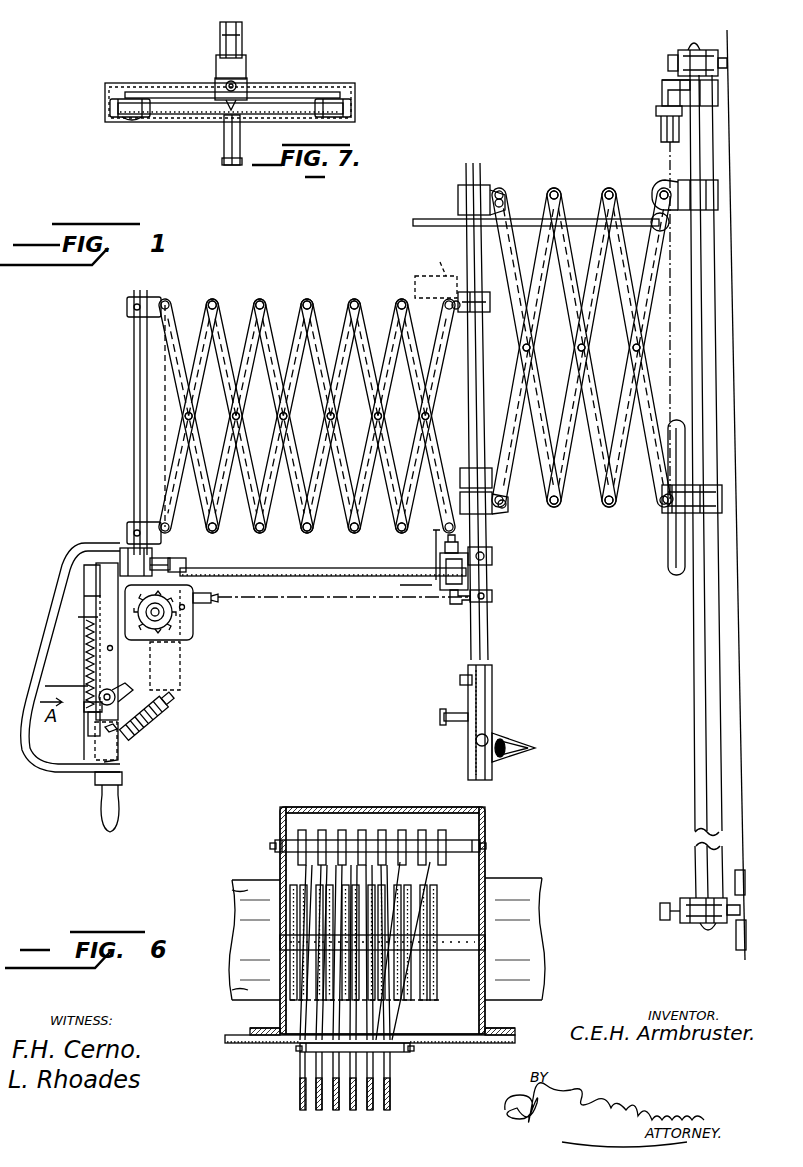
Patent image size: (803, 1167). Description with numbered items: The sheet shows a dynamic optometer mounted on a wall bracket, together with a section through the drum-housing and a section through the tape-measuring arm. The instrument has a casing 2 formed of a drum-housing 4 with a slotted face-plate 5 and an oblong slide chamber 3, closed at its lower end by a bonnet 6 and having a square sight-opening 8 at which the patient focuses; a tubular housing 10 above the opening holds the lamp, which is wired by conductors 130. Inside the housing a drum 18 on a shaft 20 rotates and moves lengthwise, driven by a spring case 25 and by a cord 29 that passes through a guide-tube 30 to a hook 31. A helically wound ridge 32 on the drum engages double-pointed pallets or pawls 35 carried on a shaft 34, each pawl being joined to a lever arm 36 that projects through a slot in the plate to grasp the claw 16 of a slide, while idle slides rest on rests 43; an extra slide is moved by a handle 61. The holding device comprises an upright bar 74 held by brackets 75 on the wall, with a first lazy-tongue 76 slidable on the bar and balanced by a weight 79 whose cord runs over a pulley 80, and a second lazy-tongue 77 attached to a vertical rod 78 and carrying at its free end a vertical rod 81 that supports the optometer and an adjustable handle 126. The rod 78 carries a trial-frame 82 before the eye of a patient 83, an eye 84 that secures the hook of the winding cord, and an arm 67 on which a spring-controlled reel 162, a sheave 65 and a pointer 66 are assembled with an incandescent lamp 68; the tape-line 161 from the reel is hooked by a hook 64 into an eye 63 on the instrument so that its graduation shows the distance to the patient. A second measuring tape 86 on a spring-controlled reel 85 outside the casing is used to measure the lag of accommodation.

In FIG. 1, the casing 2 is at (90, 720).
In FIG. 1, the slide chamber 3 is at (118, 655).
In FIG. 1, the drum-housing 4 is at (195, 620).
In FIG. 6, the drum-housing 4 is at (486, 816).
In FIG. 6, the slotted face-plate 5 is at (510, 1040).
In FIG. 1, the bonnet 6 is at (95, 748).
In FIG. 1, the sight-opening 8 is at (120, 742).
In FIG. 1, the tubular housing 10 is at (145, 712).
In FIG. 6, the claw 16 is at (300, 1088).
In FIG. 6, the drum 18 is at (437, 966).
In FIG. 6, the shaft 20 is at (468, 935).
In FIG. 1, the spring case 25 is at (175, 638).
In FIG. 1, the cord 29 is at (344, 614).
In FIG. 1, the guide-tube 30 is at (218, 596).
In FIG. 1, the hook 31 is at (458, 602).
In FIG. 6, the helically wound ridge 32 is at (437, 998).
In FIG. 6, the shaft 34 is at (470, 842).
In FIG. 6, the double-pointed pallets or pawls 35 is at (400, 840).
In FIG. 6, the lever arm 36 is at (382, 1022).
In FIG. 6, the rests 43 is at (412, 1048).
In FIG. 1, the handle 61 is at (84, 596).
In FIG. 1, the eye 63 is at (120, 562).
In FIG. 1, the hook 64 is at (186, 562).
In FIG. 7, the sheave 65 is at (340, 103).
In FIG. 7, the pointer 66 is at (250, 88).
In FIG. 7, the arm 67 is at (215, 90).
In FIG. 1, the arm 67 is at (492, 554).
In FIG. 7, the incandescent lamp 68 is at (247, 64).
In FIG. 1, the upright bar 74 is at (694, 630).
In FIG. 1, the brackets 75 is at (678, 60).
In FIG. 1, the lazy-tongue 76 is at (550, 190).
In FIG. 1, the lazy-tongue 77 is at (255, 300).
In FIG. 7, the vertical rod 78 is at (224, 158).
In FIG. 1, the vertical rod 78 is at (467, 258).
In FIG. 1, the weight 79 is at (668, 545).
In FIG. 1, the pulley 80 is at (658, 138).
In FIG. 1, the vertical rod 81 is at (133, 411).
In FIG. 1, the trial-frame 82 is at (492, 700).
In FIG. 1, the eye of a patient 83 is at (520, 736).
In FIG. 1, the eye 84 is at (492, 596).
In FIG. 1, the spring-controlled reel 85 is at (115, 690).
In FIG. 1, the measuring tape 86 is at (60, 686).
In FIG. 1, the handle 126 is at (64, 588).
In FIG. 1, the conductors 130 is at (436, 262).
In FIG. 7, the tape-line 161 is at (190, 112).
In FIG. 1, the tape-line 161 is at (292, 568).
In FIG. 7, the spring-controlled reel 162 is at (110, 103).